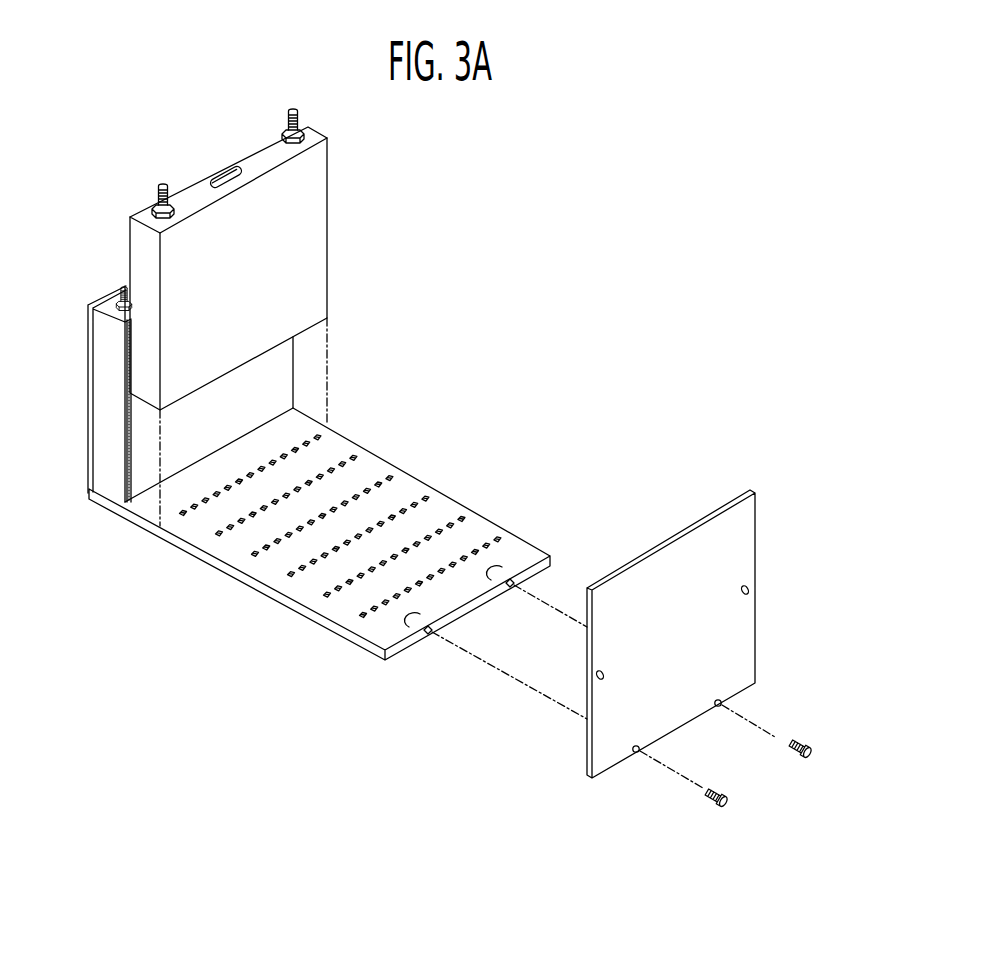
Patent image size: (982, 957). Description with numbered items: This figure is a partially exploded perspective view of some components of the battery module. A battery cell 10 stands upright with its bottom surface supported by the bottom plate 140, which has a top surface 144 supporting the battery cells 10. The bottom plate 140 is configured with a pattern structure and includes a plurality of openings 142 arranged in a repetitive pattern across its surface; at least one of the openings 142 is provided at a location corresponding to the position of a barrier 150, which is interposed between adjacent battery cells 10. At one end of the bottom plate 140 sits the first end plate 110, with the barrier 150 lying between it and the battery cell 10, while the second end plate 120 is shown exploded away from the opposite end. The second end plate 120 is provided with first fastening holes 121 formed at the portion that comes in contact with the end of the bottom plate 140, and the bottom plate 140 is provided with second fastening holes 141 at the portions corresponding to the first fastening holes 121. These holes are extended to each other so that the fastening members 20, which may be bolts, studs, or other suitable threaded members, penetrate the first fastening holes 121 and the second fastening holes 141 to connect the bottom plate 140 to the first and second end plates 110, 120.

The battery cell 10 is at (329, 211).
The first end plate 110 is at (86, 388).
The barrier 150 is at (116, 431).
The bottom plate 140 is at (288, 612).
The top surface 144 is at (330, 440).
The openings 142 is at (253, 557).
The second fastening holes 141 is at (513, 583).
The second end plate 120 is at (583, 750).
The first fastening holes 121 is at (640, 749).
The fastening members 20 is at (729, 806).